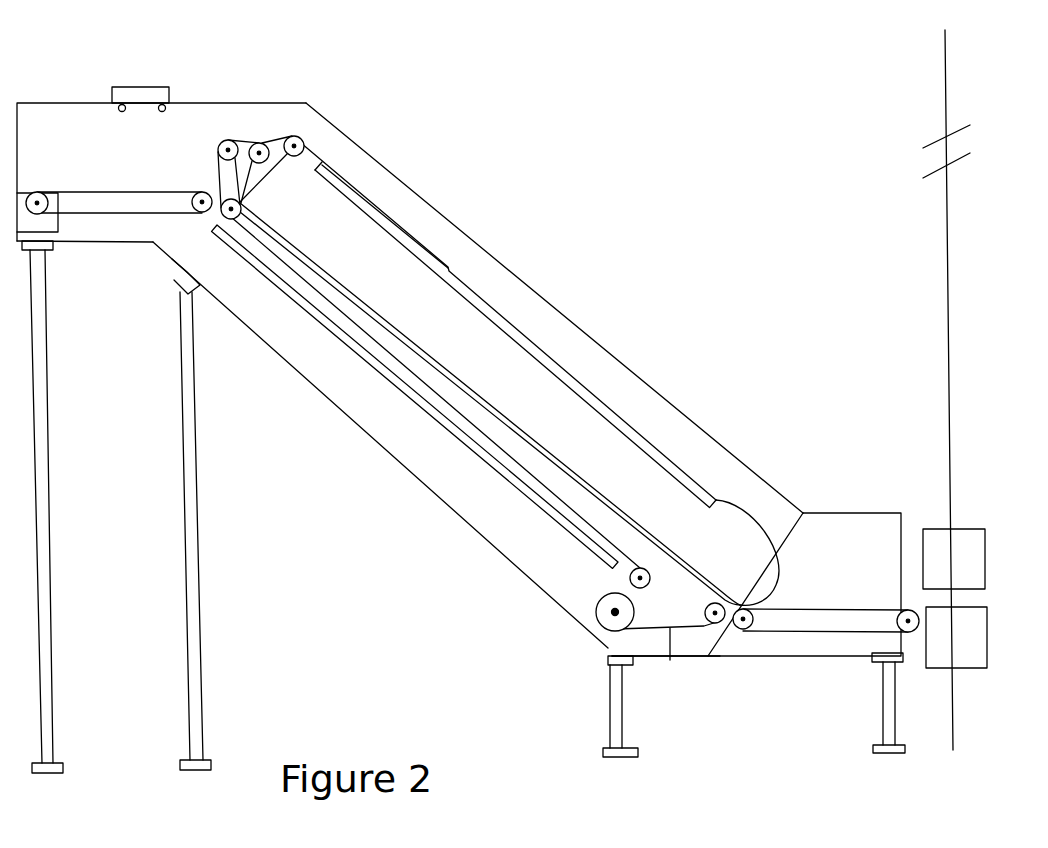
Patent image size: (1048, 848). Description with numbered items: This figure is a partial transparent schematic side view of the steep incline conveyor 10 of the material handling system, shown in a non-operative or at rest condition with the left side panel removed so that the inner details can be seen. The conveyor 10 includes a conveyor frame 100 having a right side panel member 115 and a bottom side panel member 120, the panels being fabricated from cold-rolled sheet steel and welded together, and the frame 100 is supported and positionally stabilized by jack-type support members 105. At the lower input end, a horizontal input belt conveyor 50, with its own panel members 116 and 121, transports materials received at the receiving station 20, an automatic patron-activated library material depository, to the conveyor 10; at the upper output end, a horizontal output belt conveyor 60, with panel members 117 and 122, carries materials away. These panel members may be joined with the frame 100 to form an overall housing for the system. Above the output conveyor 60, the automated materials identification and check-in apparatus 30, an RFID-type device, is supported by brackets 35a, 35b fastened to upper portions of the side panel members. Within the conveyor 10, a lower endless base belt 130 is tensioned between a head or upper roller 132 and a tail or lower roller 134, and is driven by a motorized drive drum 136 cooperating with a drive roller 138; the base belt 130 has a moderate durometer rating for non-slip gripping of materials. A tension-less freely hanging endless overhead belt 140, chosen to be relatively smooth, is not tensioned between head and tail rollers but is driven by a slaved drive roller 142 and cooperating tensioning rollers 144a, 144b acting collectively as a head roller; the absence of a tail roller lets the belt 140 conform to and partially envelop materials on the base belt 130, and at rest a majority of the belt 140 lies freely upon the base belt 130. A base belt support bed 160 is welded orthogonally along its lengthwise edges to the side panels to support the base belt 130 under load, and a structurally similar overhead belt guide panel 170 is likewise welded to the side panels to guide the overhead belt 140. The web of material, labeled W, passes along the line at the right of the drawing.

The steep incline conveyor 10 is at (745, 167).
The receiving station 20 is at (975, 528).
The automated materials identification and check-in apparatus 30 is at (155, 86).
The bracket 35a is at (121, 112).
The bracket 35b is at (162, 112).
The horizontal input belt conveyor 50 is at (822, 610).
The horizontal output belt conveyor 60 is at (87, 192).
The conveyor frame 100 is at (688, 406).
The support members 105 is at (50, 586).
The right side panel member 115 is at (405, 200).
The panel member 116 is at (850, 512).
The panel member 117 is at (55, 112).
The bottom side panel member 120 is at (337, 408).
The panel member 121 is at (803, 657).
The panel member 122 is at (98, 244).
The lower endless base belt 130 is at (670, 660).
The head roller 132 is at (240, 219).
The tail roller 134 is at (715, 627).
The motorized drive drum 136 is at (596, 612).
The drive roller 138 is at (631, 578).
The tension-less freely hanging endless overhead belt 140 is at (742, 505).
The slaved drive roller 142 is at (260, 143).
The tensioning roller 144a is at (229, 140).
The tensioning roller 144b is at (296, 136).
The base belt support bed 160 is at (508, 485).
The overhead belt guide panel 170 is at (447, 272).
The web W is at (962, 280).